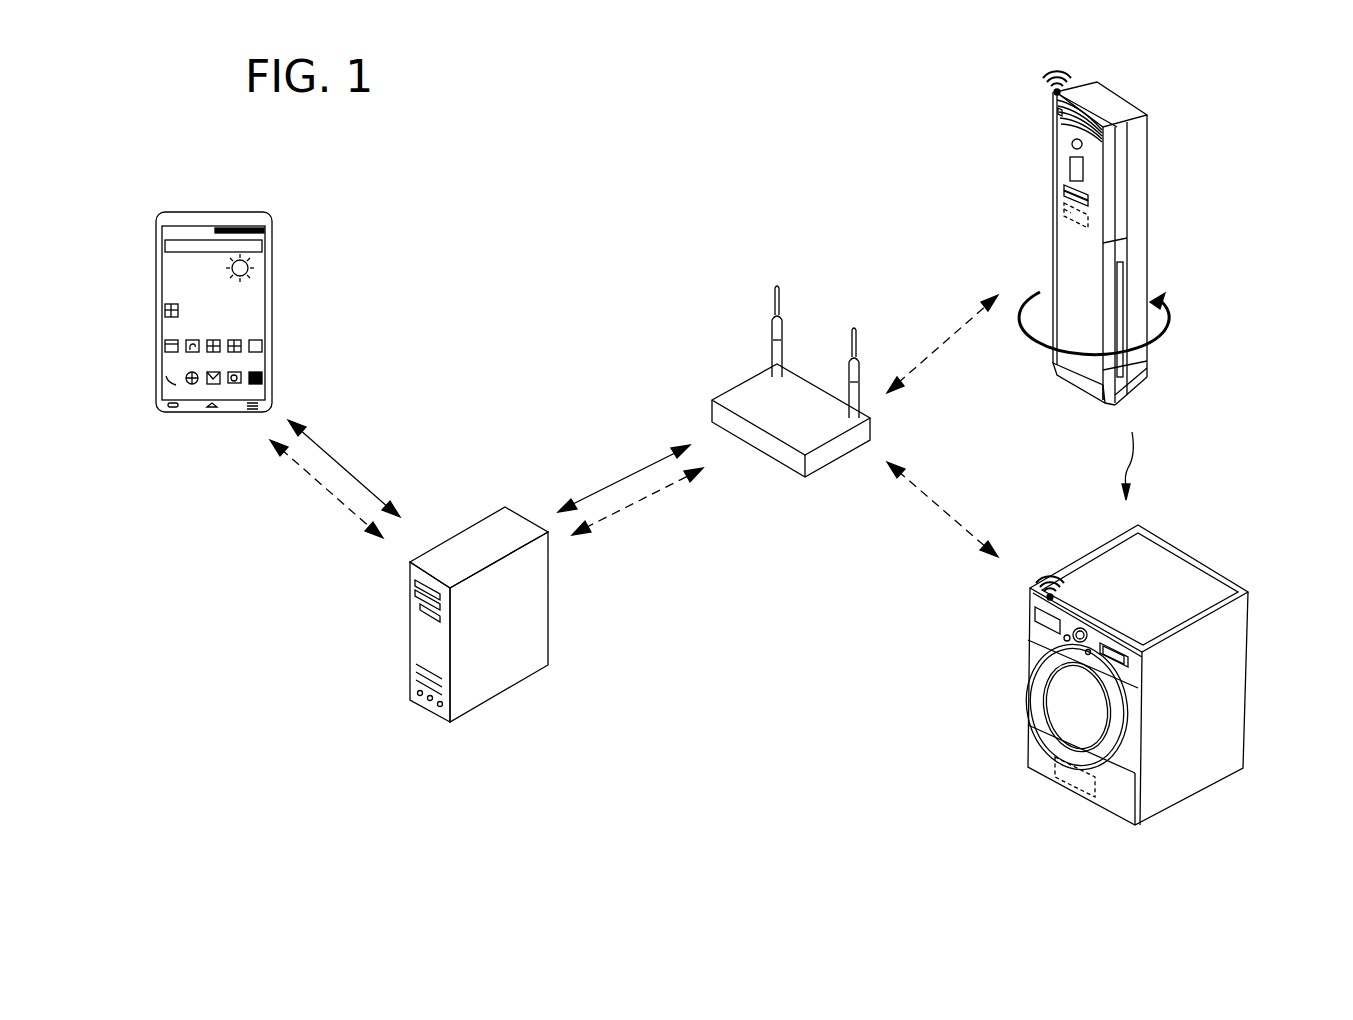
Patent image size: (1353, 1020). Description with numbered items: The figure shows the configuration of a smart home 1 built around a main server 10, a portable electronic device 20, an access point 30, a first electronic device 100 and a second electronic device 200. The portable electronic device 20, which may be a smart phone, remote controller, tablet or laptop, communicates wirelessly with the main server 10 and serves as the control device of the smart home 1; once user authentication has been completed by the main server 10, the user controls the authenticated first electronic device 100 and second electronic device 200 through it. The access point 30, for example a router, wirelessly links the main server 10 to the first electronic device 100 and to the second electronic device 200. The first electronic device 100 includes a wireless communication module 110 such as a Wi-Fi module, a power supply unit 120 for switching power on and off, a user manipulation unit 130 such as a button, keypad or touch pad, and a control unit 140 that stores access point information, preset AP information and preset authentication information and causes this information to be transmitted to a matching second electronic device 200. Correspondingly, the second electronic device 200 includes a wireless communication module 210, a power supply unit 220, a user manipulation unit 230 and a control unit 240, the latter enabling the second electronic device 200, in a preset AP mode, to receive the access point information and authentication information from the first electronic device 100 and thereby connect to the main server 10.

The smart home 1 is at (556, 140).
The main server 10 is at (418, 636).
The portable electronic device 20 is at (214, 212).
The access point 30 is at (730, 398).
The first electronic device 100 is at (1066, 250).
The wireless communication module 110 is at (1060, 113).
The power supply unit 120 is at (1071, 145).
The user manipulation unit 130 is at (1063, 188).
The control unit 140 is at (1064, 215).
The second electronic device 200 is at (1035, 748).
The wireless communication module 210 is at (1040, 612).
The power supply unit 220 is at (1055, 645).
The user manipulation unit 230 is at (1115, 650).
The control unit 240 is at (1065, 790).